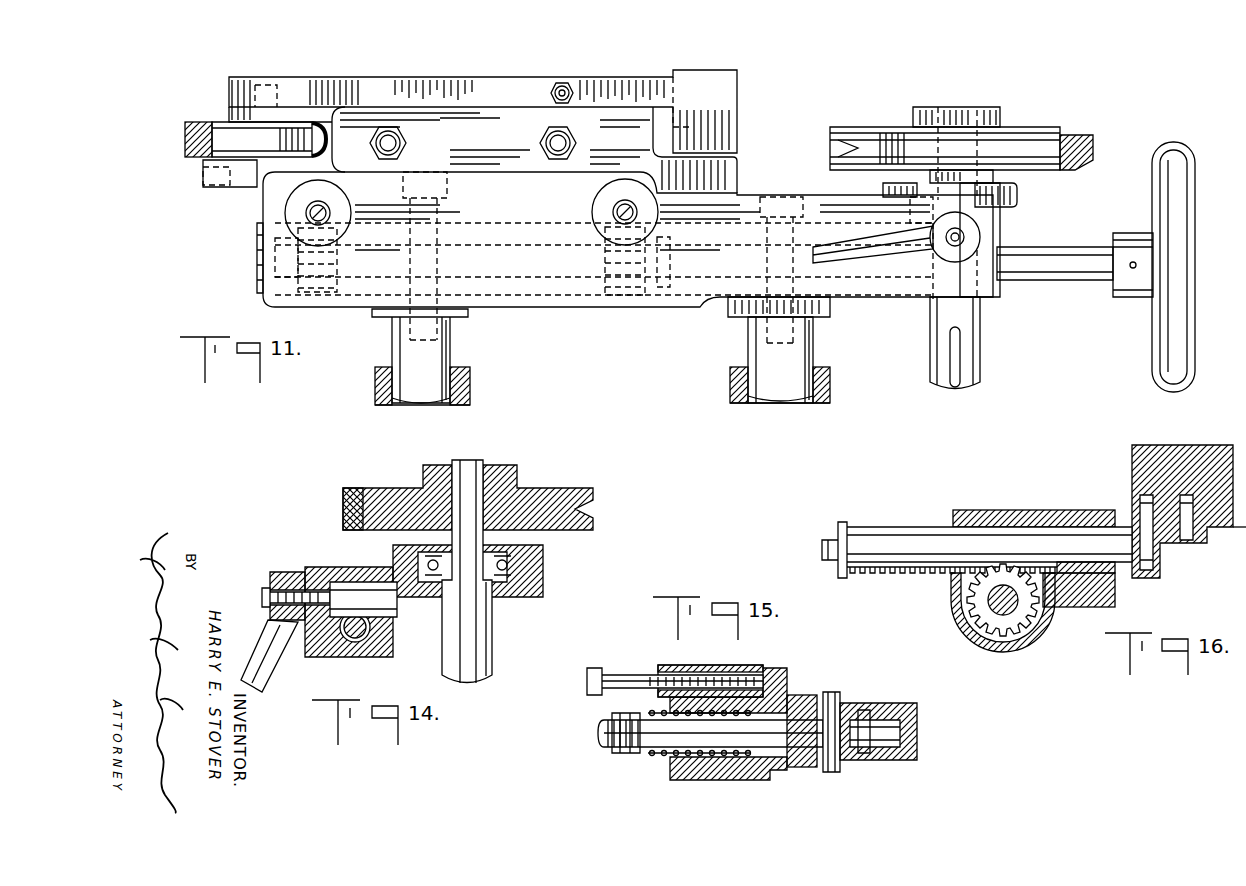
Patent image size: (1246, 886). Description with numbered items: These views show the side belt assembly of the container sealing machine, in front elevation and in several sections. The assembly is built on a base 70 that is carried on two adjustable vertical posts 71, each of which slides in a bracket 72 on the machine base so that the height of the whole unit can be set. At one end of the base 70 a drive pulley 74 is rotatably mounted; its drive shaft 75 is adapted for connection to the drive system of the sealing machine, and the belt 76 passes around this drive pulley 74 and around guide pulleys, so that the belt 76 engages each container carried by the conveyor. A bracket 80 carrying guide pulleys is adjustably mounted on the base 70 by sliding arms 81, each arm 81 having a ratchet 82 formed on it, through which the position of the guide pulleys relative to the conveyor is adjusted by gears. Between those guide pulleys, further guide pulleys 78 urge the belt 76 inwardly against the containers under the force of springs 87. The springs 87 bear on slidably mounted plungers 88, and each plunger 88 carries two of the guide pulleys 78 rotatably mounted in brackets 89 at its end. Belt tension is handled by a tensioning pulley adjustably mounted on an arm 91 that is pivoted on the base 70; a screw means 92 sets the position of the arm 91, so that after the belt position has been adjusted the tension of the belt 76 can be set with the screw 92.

In FIG. 11, the base 70 is at (738, 202).
In FIG. 16, the base 70 is at (1033, 510).
In FIG. 11, the adjustable vertical posts 71 is at (453, 347).
In FIG. 11, the brackets 72 is at (470, 384).
In FIG. 11, the drive pulley 74 is at (1040, 130).
In FIG. 14, the drive pulley 74 is at (563, 490).
In FIG. 11, the drive shaft 75 is at (973, 353).
In FIG. 14, the drive shaft 75 is at (492, 632).
In FIG. 11, the belt 76 is at (1093, 142).
In FIG. 14, the belt 76 is at (343, 512).
In FIG. 15, the belt 76 is at (917, 721).
In FIG. 15, the guide pulleys 78 is at (880, 748).
In FIG. 15, the bracket 80 is at (773, 682).
In FIG. 16, the sliding arms 81 is at (888, 530).
In FIG. 16, the ratchet 82 is at (917, 575).
In FIG. 15, the springs 87 is at (667, 757).
In FIG. 15, the plungers 88 is at (597, 733).
In FIG. 15, the brackets 89 is at (873, 702).
In FIG. 15, the arm 91 is at (728, 670).
In FIG. 15, the screw means 92 is at (620, 676).